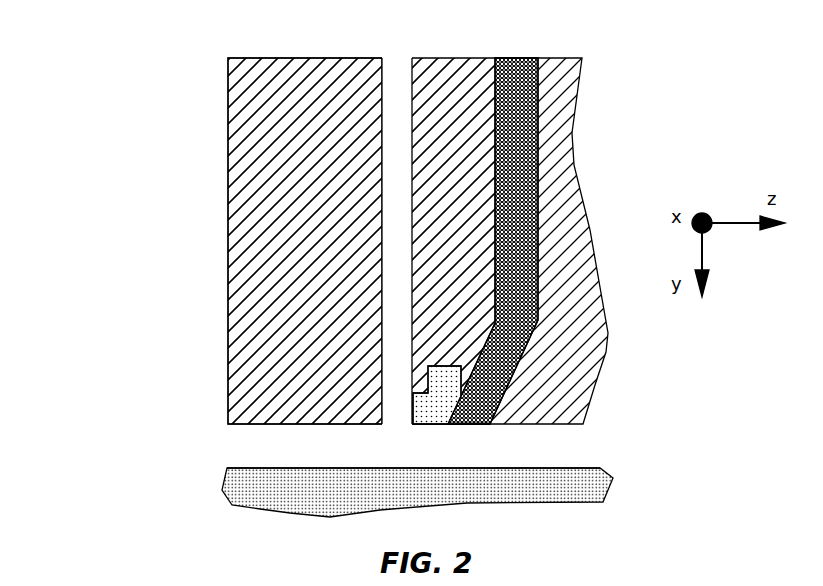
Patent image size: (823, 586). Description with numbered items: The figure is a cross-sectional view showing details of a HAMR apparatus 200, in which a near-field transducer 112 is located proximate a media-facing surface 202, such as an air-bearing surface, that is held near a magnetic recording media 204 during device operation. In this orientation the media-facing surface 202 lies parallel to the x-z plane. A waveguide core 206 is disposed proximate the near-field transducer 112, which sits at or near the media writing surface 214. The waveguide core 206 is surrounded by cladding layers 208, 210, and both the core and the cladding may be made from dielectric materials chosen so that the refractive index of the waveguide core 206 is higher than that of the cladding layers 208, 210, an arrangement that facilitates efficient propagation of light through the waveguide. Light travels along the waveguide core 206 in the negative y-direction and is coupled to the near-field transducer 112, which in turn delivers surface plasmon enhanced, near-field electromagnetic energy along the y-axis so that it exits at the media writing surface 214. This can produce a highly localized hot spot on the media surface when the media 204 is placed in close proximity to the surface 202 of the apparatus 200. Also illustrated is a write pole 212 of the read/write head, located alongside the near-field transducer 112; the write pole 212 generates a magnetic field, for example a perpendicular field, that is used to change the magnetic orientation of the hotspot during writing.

The HAMR apparatus 200 is at (363, 269).
The media-facing surface 202 is at (247, 426).
The magnetic recording media 204 is at (599, 474).
The waveguide core 206 is at (403, 177).
The cladding layer 208 is at (232, 89).
The cladding layer 210 is at (448, 60).
The write pole 212 is at (517, 58).
The media writing surface 214 is at (558, 467).
The near-field transducer 112 is at (426, 426).